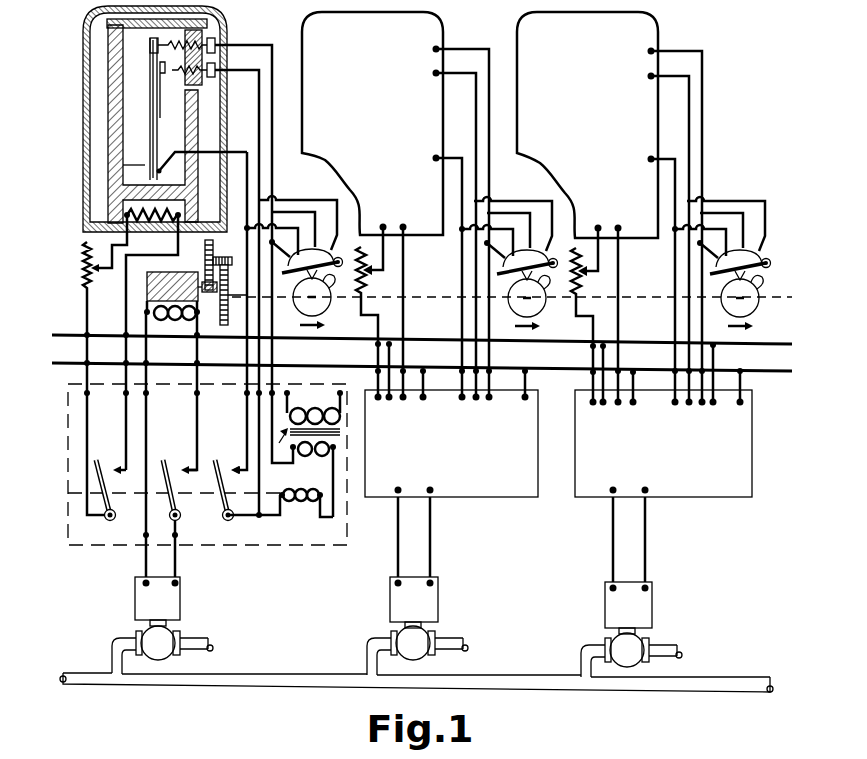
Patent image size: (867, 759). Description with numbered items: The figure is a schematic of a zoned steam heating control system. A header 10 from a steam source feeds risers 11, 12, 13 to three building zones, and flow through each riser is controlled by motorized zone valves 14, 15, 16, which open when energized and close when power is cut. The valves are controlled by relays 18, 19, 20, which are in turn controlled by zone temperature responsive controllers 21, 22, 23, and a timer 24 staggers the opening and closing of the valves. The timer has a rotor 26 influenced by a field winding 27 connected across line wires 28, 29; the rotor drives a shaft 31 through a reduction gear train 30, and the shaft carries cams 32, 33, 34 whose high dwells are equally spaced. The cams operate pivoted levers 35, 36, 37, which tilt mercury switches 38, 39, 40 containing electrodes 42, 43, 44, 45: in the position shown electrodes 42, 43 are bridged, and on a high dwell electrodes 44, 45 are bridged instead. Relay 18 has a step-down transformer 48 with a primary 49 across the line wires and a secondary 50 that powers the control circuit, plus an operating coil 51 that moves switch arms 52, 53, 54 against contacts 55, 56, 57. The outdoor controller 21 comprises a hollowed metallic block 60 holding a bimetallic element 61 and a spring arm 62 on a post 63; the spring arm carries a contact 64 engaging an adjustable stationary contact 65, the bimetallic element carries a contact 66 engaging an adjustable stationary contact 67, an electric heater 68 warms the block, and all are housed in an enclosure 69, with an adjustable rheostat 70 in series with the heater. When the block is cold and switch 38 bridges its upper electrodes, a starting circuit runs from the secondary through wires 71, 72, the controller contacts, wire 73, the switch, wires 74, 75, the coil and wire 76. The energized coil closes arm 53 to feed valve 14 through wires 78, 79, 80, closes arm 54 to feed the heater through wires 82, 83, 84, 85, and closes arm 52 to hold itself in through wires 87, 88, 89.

The header 10 is at (207, 686).
The riser 11 is at (114, 650).
The riser 12 is at (372, 650).
The riser 13 is at (590, 654).
The motorized zone valve 14 is at (182, 606).
The motorized zone valve 15 is at (440, 610).
The motorized zone valve 16 is at (654, 612).
The relay 18 is at (250, 545).
The relay 19 is at (478, 497).
The relay 20 is at (700, 497).
The zone temperature responsive controller 21 is at (78, 52).
The zone temperature responsive controller 22 is at (290, 28).
The zone temperature responsive controller 23 is at (511, 25).
The timer 24 is at (773, 303).
The rotor 26 is at (150, 273).
The field winding 27 is at (172, 318).
The line wire 28 is at (59, 362).
The line wire 29 is at (59, 334).
The reduction gear train 30 is at (204, 256).
The shaft 31 is at (233, 295).
The cam 32 is at (296, 306).
The cam 33 is at (511, 307).
The cam 34 is at (724, 307).
The pivoted lever 35 is at (292, 276).
The pivoted lever 36 is at (507, 277).
The pivoted lever 37 is at (720, 277).
The mercury switch 38 is at (339, 258).
The mercury switch 39 is at (554, 259).
The mercury switch 40 is at (769, 261).
The electrode 42 is at (493, 250).
The electrode 43 is at (296, 248).
The electrode 44 is at (312, 240).
The electrode 45 is at (331, 232).
The step-down transformer 48 is at (279, 443).
The primary 49 is at (321, 408).
The secondary 50 is at (313, 456).
The operating coil 51 is at (293, 509).
The switch arm 52 is at (216, 474).
The switch arm 53 is at (163, 474).
The switch arm 54 is at (99, 471).
The contact 55 is at (232, 466).
The contact 56 is at (181, 466).
The contact 57 is at (113, 466).
The metallic block 60 is at (110, 108).
The bimetallic element 61 is at (161, 162).
The spring arm 62 is at (149, 58).
The post 63 is at (141, 163).
The contact 64 is at (150, 39).
The adjustable stationary contact 65 is at (180, 41).
The contact 66 is at (162, 96).
The adjustable stationary contact 67 is at (180, 78).
The electric heater 68 is at (140, 232).
The enclosure 69 is at (84, 173).
The adjustable rheostat 70 is at (83, 263).
The wire 71 is at (276, 470).
The wire 72 is at (261, 50).
The wire 73 is at (258, 93).
The wire 74 is at (259, 199).
The wire 75 is at (270, 522).
The wire 76 is at (331, 479).
The wire 78 is at (194, 376).
The wire 79 is at (177, 558).
The wire 80 is at (144, 351).
The wire 82 is at (123, 376).
The wire 83 is at (83, 376).
The wire 84 is at (109, 253).
The wire 85 is at (124, 306).
The wire 87 is at (244, 150).
The wire 88 is at (244, 243).
The wire 89 is at (243, 520).